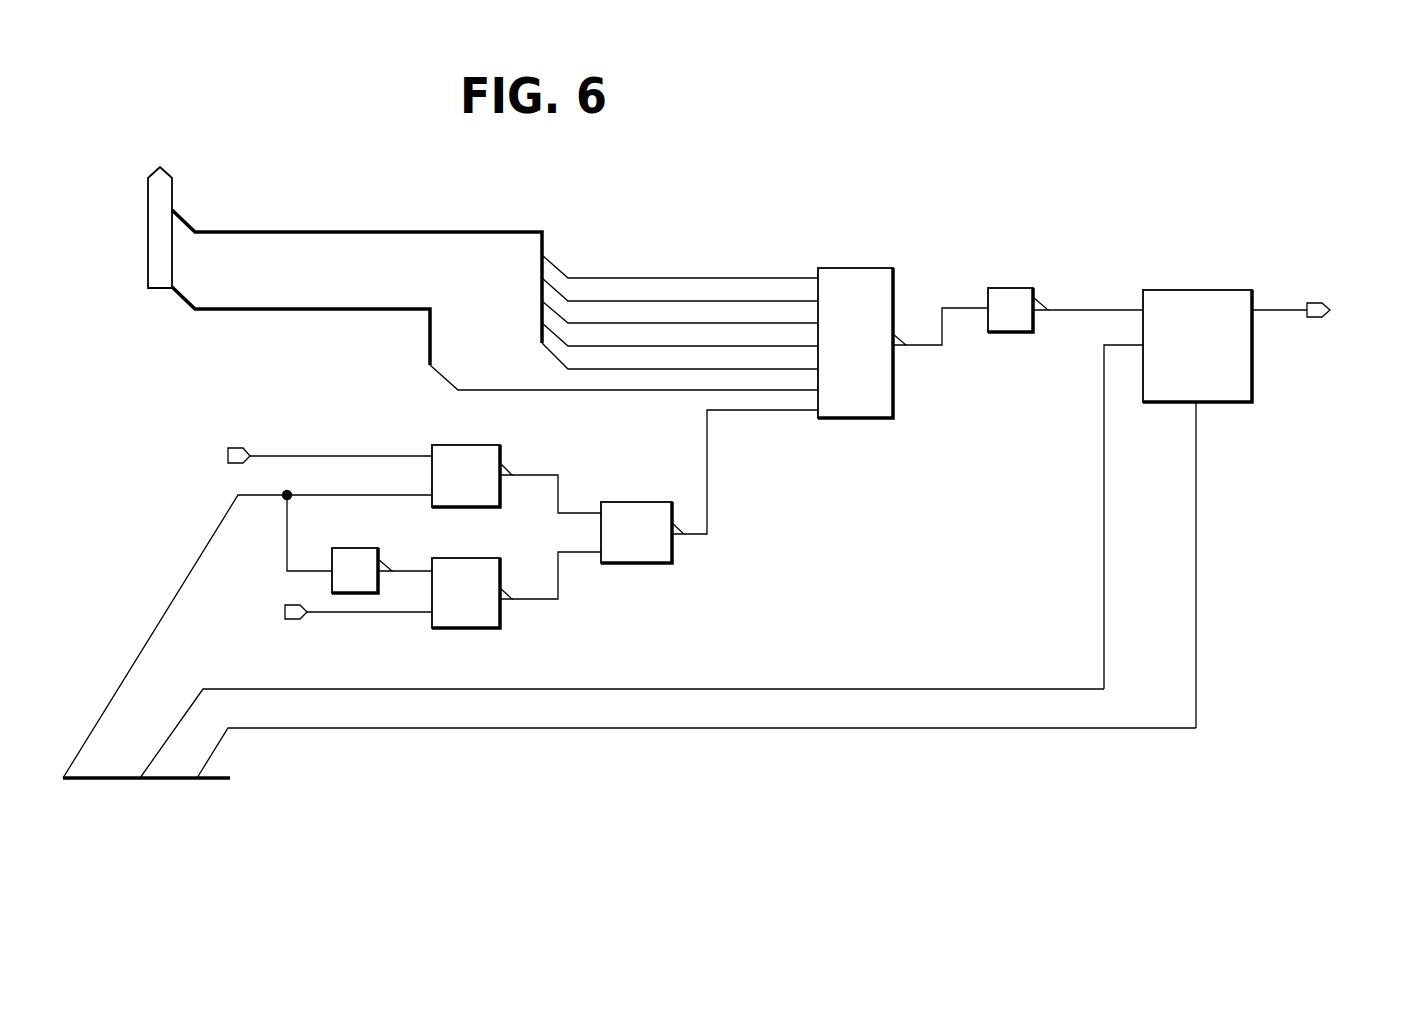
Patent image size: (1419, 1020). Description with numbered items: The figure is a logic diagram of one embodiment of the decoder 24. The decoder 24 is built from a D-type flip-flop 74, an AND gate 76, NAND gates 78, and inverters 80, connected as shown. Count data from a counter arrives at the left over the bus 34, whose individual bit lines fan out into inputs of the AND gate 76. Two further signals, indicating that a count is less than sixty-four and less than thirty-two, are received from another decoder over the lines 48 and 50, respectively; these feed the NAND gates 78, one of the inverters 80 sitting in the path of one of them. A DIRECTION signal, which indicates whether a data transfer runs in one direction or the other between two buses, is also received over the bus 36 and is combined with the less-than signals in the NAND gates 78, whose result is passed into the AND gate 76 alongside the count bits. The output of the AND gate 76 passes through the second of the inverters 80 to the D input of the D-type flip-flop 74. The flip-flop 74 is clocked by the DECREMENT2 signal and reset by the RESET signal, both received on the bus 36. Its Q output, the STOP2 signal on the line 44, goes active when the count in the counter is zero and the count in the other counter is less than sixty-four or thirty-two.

The decoder 24 is at (880, 176).
The bus 34 is at (148, 240).
The bus 36 is at (100, 780).
The line 44 is at (1272, 310).
The line 48 is at (303, 456).
The line 50 is at (362, 612).
The D-type flip-flop 74 is at (1220, 290).
The AND gate 76 is at (880, 268).
The NAND gates 78 is at (484, 445).
The inverters 80 is at (1022, 288).